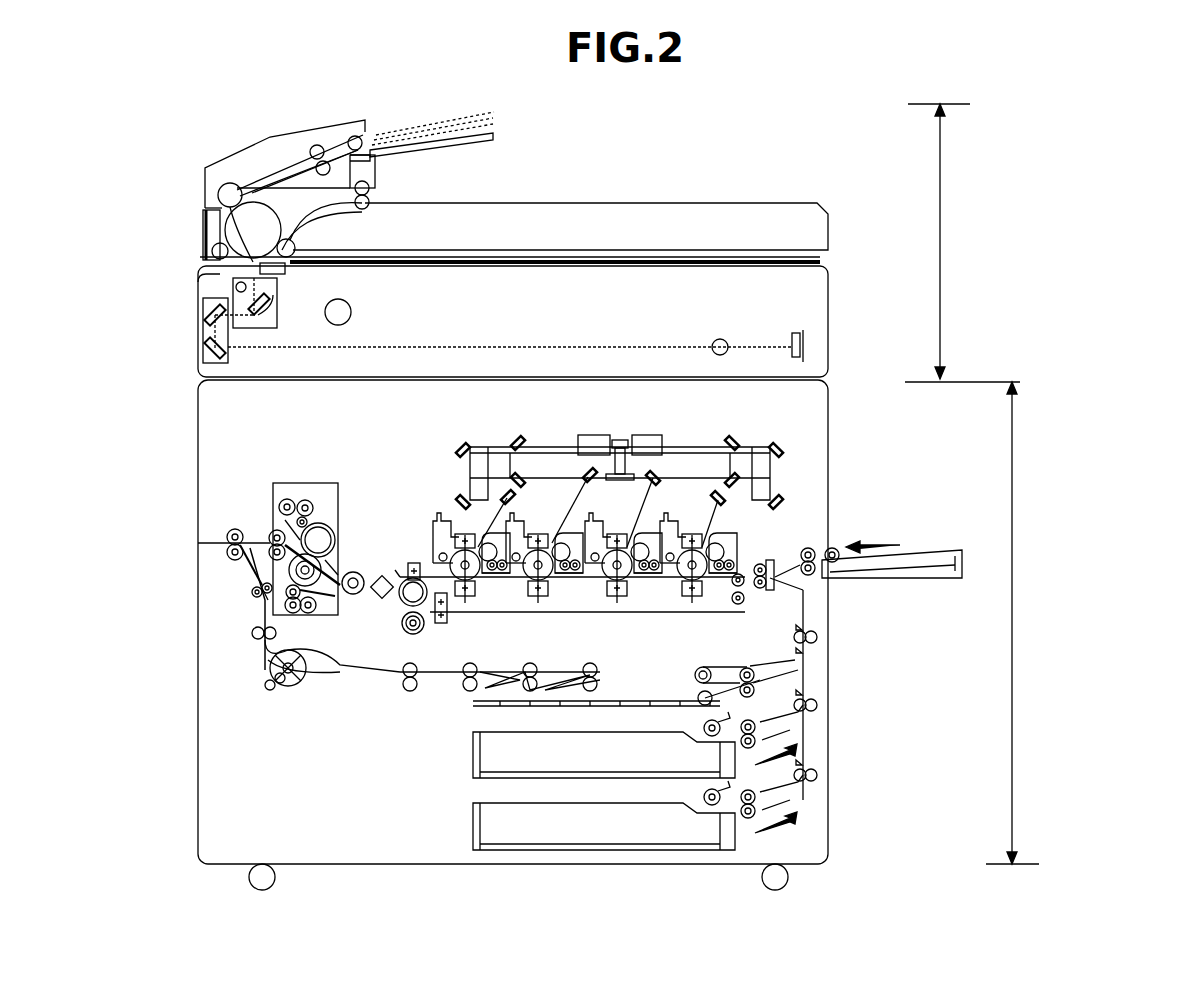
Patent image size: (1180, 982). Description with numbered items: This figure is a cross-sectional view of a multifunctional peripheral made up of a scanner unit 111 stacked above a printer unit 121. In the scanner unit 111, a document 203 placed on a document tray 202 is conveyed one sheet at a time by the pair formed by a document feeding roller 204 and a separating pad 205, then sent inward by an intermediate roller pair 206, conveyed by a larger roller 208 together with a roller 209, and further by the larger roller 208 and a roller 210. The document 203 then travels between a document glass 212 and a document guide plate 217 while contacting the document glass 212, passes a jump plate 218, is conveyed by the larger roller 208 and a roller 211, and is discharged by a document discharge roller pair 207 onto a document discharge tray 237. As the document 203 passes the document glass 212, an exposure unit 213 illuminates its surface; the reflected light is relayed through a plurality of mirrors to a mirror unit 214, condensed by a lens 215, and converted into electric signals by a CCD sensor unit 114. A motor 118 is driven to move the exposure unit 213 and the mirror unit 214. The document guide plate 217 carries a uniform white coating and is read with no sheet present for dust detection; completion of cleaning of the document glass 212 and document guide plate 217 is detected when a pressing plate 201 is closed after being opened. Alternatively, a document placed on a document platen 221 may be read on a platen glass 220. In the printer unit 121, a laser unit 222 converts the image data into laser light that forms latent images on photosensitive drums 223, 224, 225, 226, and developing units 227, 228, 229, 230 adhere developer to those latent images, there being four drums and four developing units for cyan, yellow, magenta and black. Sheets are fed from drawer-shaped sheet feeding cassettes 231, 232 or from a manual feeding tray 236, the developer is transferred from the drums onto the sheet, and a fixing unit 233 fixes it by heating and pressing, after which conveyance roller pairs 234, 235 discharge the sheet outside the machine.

The scanner unit 111 is at (945, 238).
The printer unit 121 is at (1017, 588).
The CCD sensor unit 114 is at (793, 333).
The motor 118 is at (351, 309).
The pressing plate 201 is at (820, 205).
The document tray 202 is at (492, 135).
The document 203 is at (455, 122).
The document feeding roller 204 is at (353, 135).
The separating pad 205 is at (374, 157).
The intermediate roller pair 206 is at (315, 145).
The document discharge roller pair 207 is at (370, 188).
The larger roller 208 is at (228, 229).
The roller 209 is at (223, 186).
The roller 210 is at (212, 251).
The roller 211 is at (293, 248).
The document glass 212 is at (202, 280).
The exposure unit 213 is at (277, 304).
The mirror unit 214 is at (203, 354).
The lens 215 is at (720, 339).
The document guide plate 217 is at (252, 193).
The jump plate 218 is at (285, 275).
The platen glass 220 is at (828, 270).
The document platen 221 is at (718, 260).
The laser unit 222 is at (648, 438).
The photosensitive drum 223 is at (709, 585).
The photosensitive drum 224 is at (633, 581).
The photosensitive drum 225 is at (557, 581).
The photosensitive drum 226 is at (482, 581).
The developing unit 227 is at (727, 574).
The developing unit 228 is at (645, 575).
The developing unit 229 is at (570, 575).
The developing unit 230 is at (495, 575).
The sheet feeding cassette 231 is at (470, 757).
The sheet feeding cassette 232 is at (470, 826).
The fixing unit 233 is at (338, 488).
The conveyance roller pair 234 is at (270, 537).
The conveyance roller pair 235 is at (230, 565).
The manual feeding tray 236 is at (896, 578).
The document discharge tray 237 is at (512, 203).